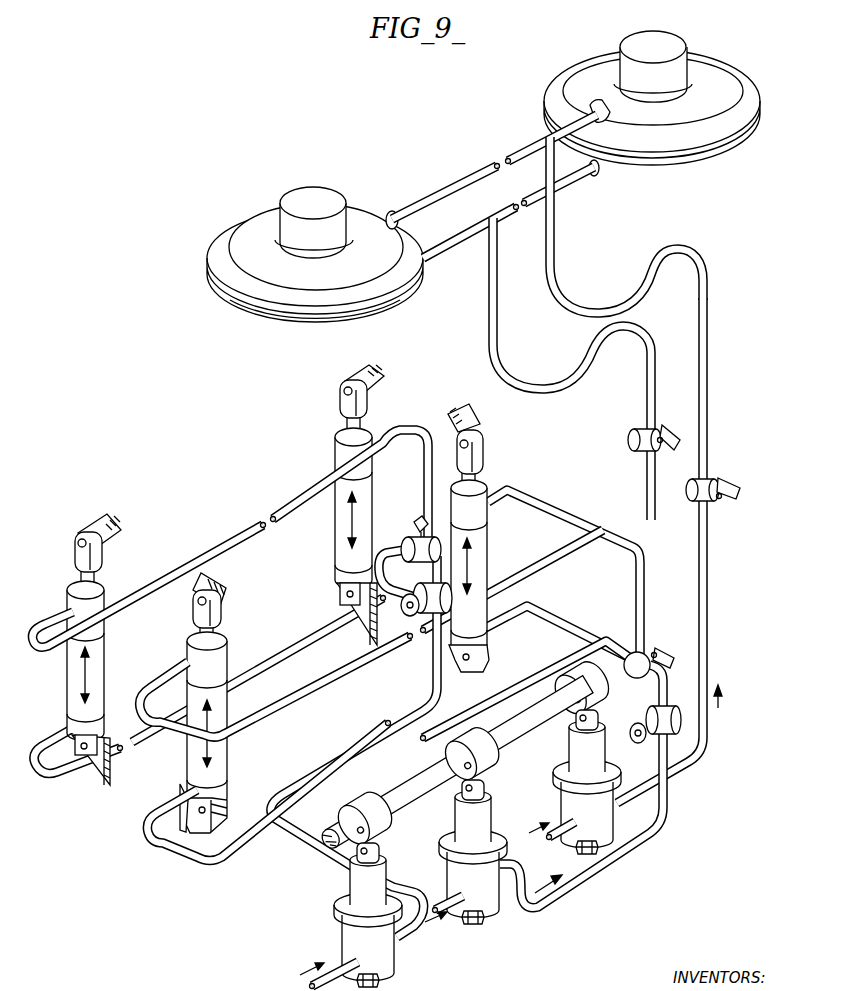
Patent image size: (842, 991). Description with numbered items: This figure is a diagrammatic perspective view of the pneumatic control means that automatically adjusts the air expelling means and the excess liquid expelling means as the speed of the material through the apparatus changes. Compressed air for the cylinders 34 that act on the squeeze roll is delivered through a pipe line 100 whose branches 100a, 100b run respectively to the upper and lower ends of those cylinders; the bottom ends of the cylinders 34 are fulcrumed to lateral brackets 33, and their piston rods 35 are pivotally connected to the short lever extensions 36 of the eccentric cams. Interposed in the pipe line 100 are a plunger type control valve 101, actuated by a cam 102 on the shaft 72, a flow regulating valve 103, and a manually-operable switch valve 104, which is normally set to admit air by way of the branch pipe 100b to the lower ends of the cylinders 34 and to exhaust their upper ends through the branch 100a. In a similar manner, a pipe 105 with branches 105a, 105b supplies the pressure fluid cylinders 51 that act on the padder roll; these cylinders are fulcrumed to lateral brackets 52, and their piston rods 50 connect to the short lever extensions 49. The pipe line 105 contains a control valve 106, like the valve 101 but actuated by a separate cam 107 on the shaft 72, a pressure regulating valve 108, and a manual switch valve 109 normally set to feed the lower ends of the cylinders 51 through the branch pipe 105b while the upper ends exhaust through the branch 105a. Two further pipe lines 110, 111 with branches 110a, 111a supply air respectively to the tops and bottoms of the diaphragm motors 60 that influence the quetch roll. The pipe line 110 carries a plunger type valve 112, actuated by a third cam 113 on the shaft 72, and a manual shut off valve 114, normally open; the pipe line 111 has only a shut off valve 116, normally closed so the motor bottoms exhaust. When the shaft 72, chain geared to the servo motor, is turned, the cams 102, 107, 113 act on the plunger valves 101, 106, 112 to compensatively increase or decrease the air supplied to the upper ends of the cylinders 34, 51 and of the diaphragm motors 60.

The diaphragm motors 60 is at (362, 216).
The branch of pipe line 110 110a is at (505, 160).
The branch of pipe line 111 111a is at (470, 240).
The third cam 113 is at (648, 397).
The pipe line 110 is at (706, 728).
The pipe line 111 is at (648, 490).
The shut off valve 116 is at (633, 443).
The manual shut off valve 114 is at (711, 476).
The branch pipe 105a is at (543, 497).
The branch pipe 105b is at (549, 618).
The pipe line 105 is at (572, 888).
The branch pipe 100a is at (262, 522).
The branch pipe 100b is at (314, 633).
The pipe line 100 is at (382, 726).
The manually-operable switch valve 104 is at (416, 527).
The flow regulating valve 103 is at (414, 612).
The manual switch valve 109 is at (652, 651).
The pressure regulating valve 108 is at (668, 712).
The piston rods 35 is at (345, 433).
The piston rods 50 is at (488, 483).
The short lever extensions 36 is at (372, 387).
The short lever extensions 49 is at (476, 418).
The cylinders 34 is at (340, 530).
The pressure fluid cylinders 51 is at (480, 560).
The lateral brackets 33 is at (362, 622).
The lateral brackets 52 is at (468, 668).
The shaft 72 is at (416, 792).
The cam 102 is at (386, 828).
The cam 107 is at (494, 757).
The plunger type control valve 101 is at (343, 940).
The control valve 106 is at (455, 878).
The plunger type valve 112 is at (575, 777).